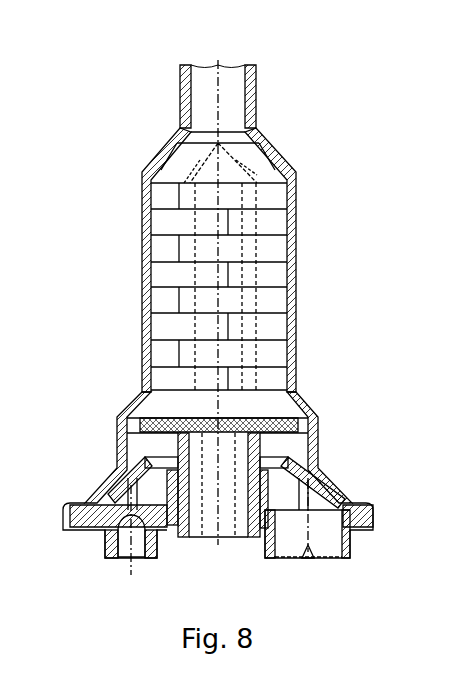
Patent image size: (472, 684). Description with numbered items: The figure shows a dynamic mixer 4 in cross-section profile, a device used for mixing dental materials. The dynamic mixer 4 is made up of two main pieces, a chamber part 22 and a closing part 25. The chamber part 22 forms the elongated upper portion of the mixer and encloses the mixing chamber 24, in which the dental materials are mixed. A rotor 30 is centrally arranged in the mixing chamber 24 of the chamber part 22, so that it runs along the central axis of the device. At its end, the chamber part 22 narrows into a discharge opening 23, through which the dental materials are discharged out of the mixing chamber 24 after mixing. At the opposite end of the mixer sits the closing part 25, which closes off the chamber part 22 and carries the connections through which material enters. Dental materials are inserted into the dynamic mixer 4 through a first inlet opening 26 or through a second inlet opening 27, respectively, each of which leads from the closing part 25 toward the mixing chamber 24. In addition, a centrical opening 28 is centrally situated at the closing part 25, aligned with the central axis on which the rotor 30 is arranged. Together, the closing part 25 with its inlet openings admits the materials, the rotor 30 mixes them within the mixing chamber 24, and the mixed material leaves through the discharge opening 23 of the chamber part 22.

The dynamic mixer 4 is at (105, 109).
The chamber part 22 is at (142, 228).
The discharge opening 23 is at (218, 66).
The mixing chamber 24 is at (143, 340).
The closing part 25 is at (90, 508).
The first inlet opening 26 is at (212, 527).
The second inlet opening 27 is at (333, 542).
The centrical opening 28 is at (124, 560).
The rotor 30 is at (243, 218).